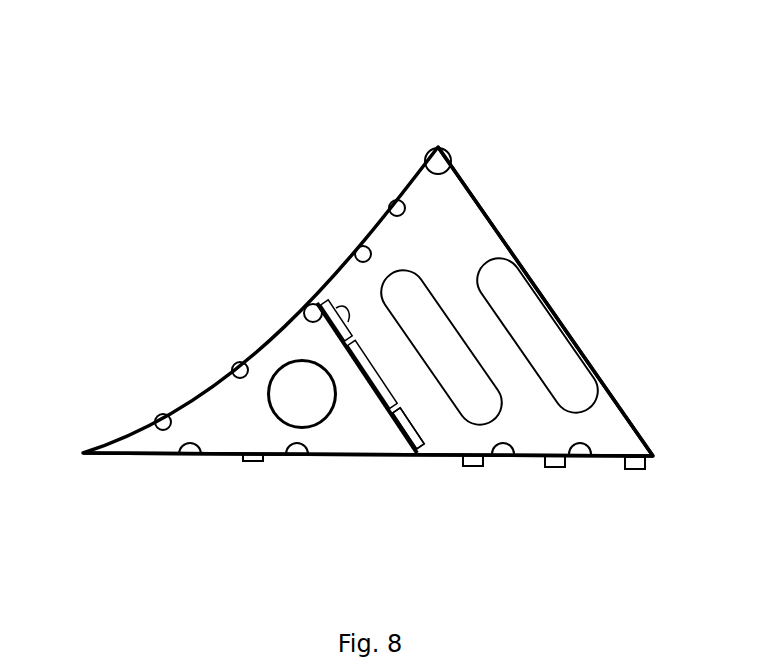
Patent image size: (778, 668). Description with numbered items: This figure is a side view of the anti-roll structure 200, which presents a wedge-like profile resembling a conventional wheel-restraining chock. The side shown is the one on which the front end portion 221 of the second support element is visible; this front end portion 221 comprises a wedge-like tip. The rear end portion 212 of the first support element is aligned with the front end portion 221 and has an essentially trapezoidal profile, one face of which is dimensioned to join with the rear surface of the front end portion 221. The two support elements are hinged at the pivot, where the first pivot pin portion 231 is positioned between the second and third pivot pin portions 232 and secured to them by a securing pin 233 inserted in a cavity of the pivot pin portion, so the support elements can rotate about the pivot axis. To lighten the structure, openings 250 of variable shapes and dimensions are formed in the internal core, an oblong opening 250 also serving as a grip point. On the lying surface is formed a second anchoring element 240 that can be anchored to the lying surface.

The anti-roll structure 200 is at (57, 62).
The rear end portion of the first support element 212 is at (497, 235).
The front end portion of the second support element 221 is at (147, 440).
The first pivot pin portion 231 is at (308, 318).
The second and third pivot pin portions 232 is at (397, 458).
The securing pin 233 is at (358, 392).
The second anchoring element 240 is at (553, 467).
The openings 250 is at (300, 381).